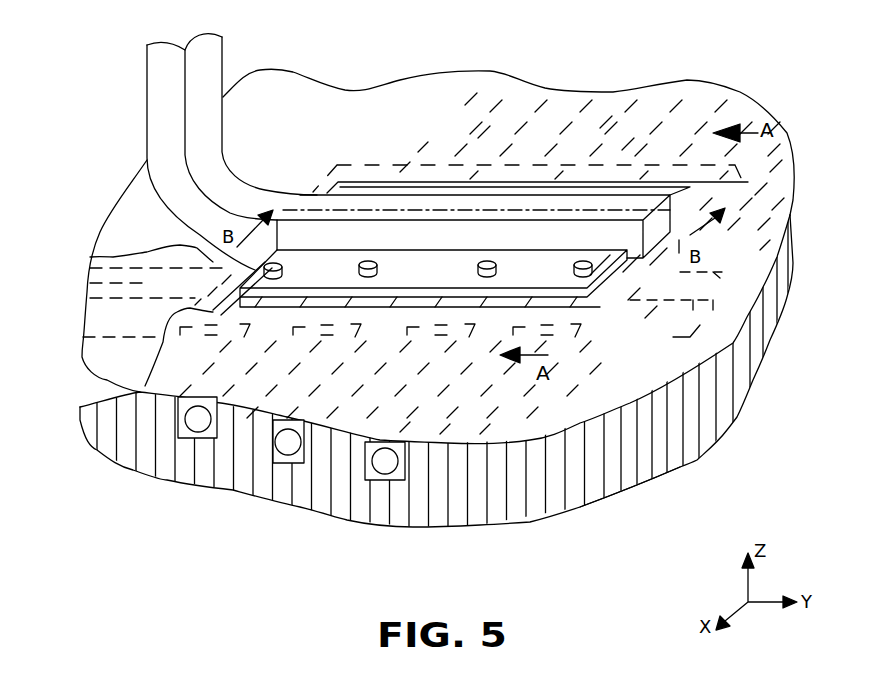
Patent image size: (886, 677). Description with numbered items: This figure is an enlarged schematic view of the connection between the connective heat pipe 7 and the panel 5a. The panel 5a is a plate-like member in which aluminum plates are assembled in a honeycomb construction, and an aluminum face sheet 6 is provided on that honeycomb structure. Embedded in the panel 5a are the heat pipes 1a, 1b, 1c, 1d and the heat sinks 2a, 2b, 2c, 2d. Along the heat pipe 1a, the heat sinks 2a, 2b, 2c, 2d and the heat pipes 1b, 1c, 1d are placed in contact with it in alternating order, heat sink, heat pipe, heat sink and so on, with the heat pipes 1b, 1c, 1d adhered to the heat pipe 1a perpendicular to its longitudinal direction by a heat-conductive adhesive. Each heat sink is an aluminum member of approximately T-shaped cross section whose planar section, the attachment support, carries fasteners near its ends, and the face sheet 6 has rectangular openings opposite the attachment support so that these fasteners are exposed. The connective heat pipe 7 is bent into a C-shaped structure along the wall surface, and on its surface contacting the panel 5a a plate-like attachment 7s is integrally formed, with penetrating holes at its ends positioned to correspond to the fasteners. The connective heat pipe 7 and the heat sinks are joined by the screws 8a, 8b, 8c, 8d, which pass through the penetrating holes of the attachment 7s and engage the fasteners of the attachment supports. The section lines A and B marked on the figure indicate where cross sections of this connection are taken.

The heat pipe 1a is at (705, 307).
The heat pipe 1b is at (450, 423).
The heat pipe 1c is at (323, 413).
The heat pipe 1d is at (270, 398).
The heat sink 2a is at (780, 140).
The heat sink 2b is at (596, 168).
The heat sink 2c is at (472, 173).
The heat sink 2d is at (110, 402).
The panel 5a is at (610, 467).
The face sheet 6 is at (360, 147).
The connective heat pipe 7 is at (165, 78).
The attachment 7s is at (688, 96).
The screw 8a is at (585, 278).
The screw 8b is at (487, 263).
The screw 8c is at (338, 182).
The screw 8d is at (110, 252).